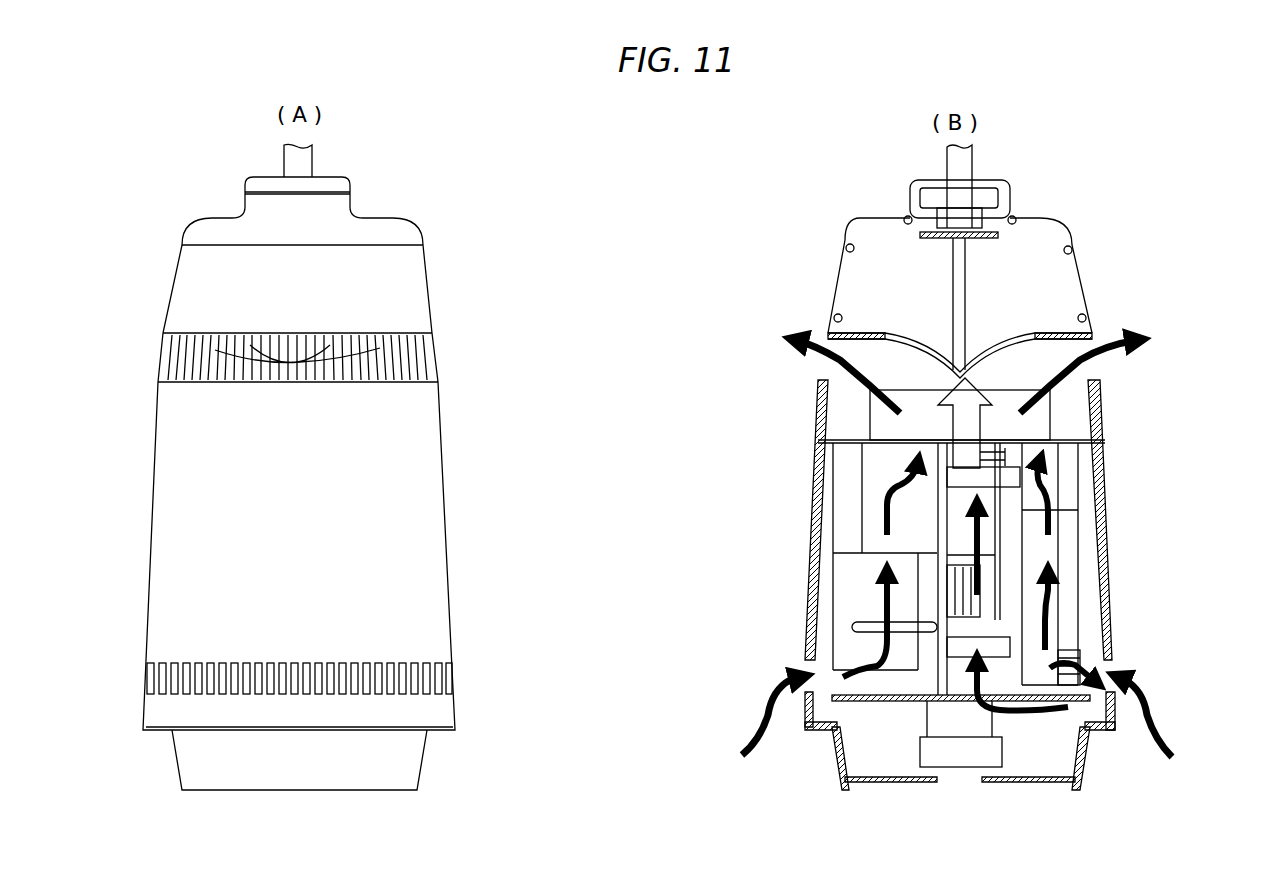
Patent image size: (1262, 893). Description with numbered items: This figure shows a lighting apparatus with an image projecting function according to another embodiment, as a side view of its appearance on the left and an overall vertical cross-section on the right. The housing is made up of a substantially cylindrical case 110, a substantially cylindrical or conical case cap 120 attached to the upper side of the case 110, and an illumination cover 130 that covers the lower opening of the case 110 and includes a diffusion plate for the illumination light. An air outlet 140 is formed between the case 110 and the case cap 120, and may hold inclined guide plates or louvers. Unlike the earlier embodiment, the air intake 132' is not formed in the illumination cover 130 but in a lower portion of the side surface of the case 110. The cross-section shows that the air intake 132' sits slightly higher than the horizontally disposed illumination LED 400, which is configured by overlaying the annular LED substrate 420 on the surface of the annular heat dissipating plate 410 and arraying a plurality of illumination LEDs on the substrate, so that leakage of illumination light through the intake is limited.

The case 110 is at (448, 515).
The case cap 120 is at (417, 257).
The illumination cover 130 is at (393, 790).
The air intake 132' is at (703, 686).
The air outlet 140 is at (440, 358).
The illumination LED 400 is at (858, 705).
The heat dissipating plate 410 is at (847, 697).
The LED substrate 420 is at (880, 705).